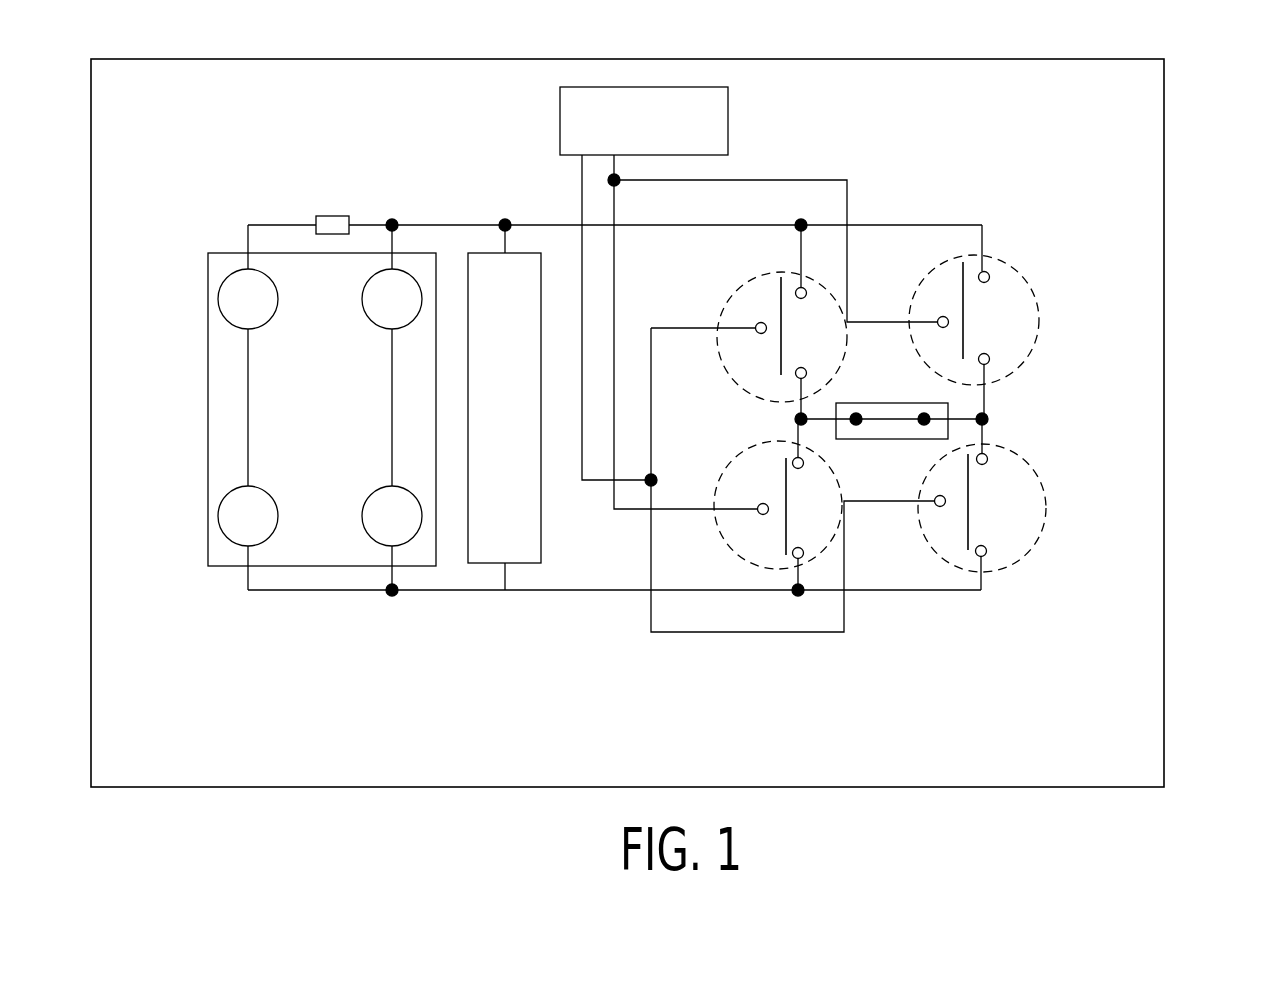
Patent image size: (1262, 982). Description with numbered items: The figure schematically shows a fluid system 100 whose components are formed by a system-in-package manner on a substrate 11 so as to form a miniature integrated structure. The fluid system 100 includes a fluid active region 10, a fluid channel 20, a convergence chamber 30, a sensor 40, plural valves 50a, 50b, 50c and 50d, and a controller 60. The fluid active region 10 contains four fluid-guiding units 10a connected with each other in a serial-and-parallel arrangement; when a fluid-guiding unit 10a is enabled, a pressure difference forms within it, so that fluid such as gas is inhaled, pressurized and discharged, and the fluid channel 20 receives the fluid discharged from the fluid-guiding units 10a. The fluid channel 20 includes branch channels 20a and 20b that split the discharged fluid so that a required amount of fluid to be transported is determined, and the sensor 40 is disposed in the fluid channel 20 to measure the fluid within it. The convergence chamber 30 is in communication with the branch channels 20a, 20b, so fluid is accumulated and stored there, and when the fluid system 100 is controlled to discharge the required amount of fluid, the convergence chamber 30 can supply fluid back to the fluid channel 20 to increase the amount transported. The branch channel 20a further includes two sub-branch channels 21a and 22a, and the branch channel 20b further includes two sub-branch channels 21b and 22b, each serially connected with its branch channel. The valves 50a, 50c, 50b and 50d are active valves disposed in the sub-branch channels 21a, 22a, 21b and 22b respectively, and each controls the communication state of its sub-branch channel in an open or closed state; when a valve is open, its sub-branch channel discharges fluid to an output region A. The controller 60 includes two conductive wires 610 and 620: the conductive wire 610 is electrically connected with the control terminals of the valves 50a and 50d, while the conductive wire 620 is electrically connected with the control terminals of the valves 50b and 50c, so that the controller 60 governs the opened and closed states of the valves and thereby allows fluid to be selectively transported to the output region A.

The fluid system 100 is at (1231, 83).
The substrate 11 is at (1164, 555).
The fluid active region 10 is at (205, 272).
The fluid-guiding unit 10a is at (320, 407).
The fluid channel 20 is at (288, 222).
The branch channel 20a is at (428, 225).
The branch channel 20b is at (463, 590).
The sensor 40 is at (337, 222).
The convergence chamber 30 is at (504, 407).
The controller 60 is at (644, 121).
The conductive wire 610 is at (578, 212).
The conductive wire 620 is at (762, 180).
The sub-branch channel 21a is at (803, 277).
The sub-branch channel 21b is at (797, 563).
The sub-branch channel 22a is at (941, 223).
The sub-branch channel 22b is at (912, 593).
The valve 50a is at (820, 283).
The valve 50b is at (822, 553).
The valve 50c is at (1013, 265).
The valve 50d is at (1013, 450).
The output region A is at (891, 401).